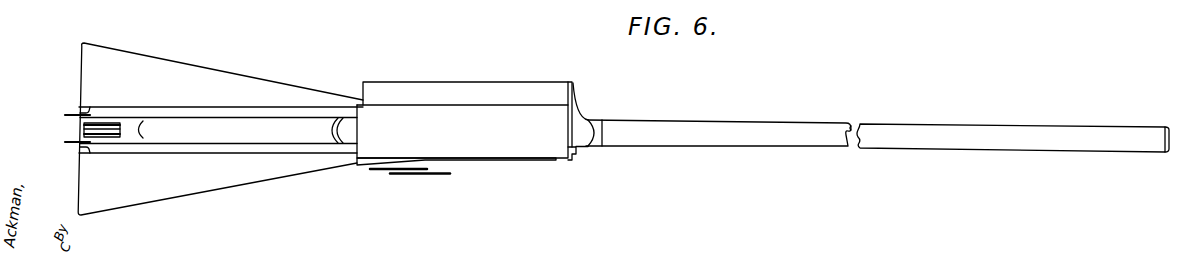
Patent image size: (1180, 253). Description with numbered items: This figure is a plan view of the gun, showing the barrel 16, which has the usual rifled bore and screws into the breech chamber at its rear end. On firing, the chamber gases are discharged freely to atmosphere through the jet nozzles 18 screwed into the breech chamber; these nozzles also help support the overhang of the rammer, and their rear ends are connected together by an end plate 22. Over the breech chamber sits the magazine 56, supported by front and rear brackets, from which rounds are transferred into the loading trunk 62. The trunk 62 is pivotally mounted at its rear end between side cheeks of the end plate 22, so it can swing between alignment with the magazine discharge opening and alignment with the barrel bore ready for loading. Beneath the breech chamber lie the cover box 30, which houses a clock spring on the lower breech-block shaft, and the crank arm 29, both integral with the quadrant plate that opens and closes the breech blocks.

The barrel 16 is at (733, 128).
The jet nozzles 18 is at (131, 67).
The end plate 22 is at (77, 122).
The crank arm 29 is at (441, 176).
The cover box 30 is at (382, 173).
The magazine 56 is at (507, 142).
The loading trunk 62 is at (250, 128).